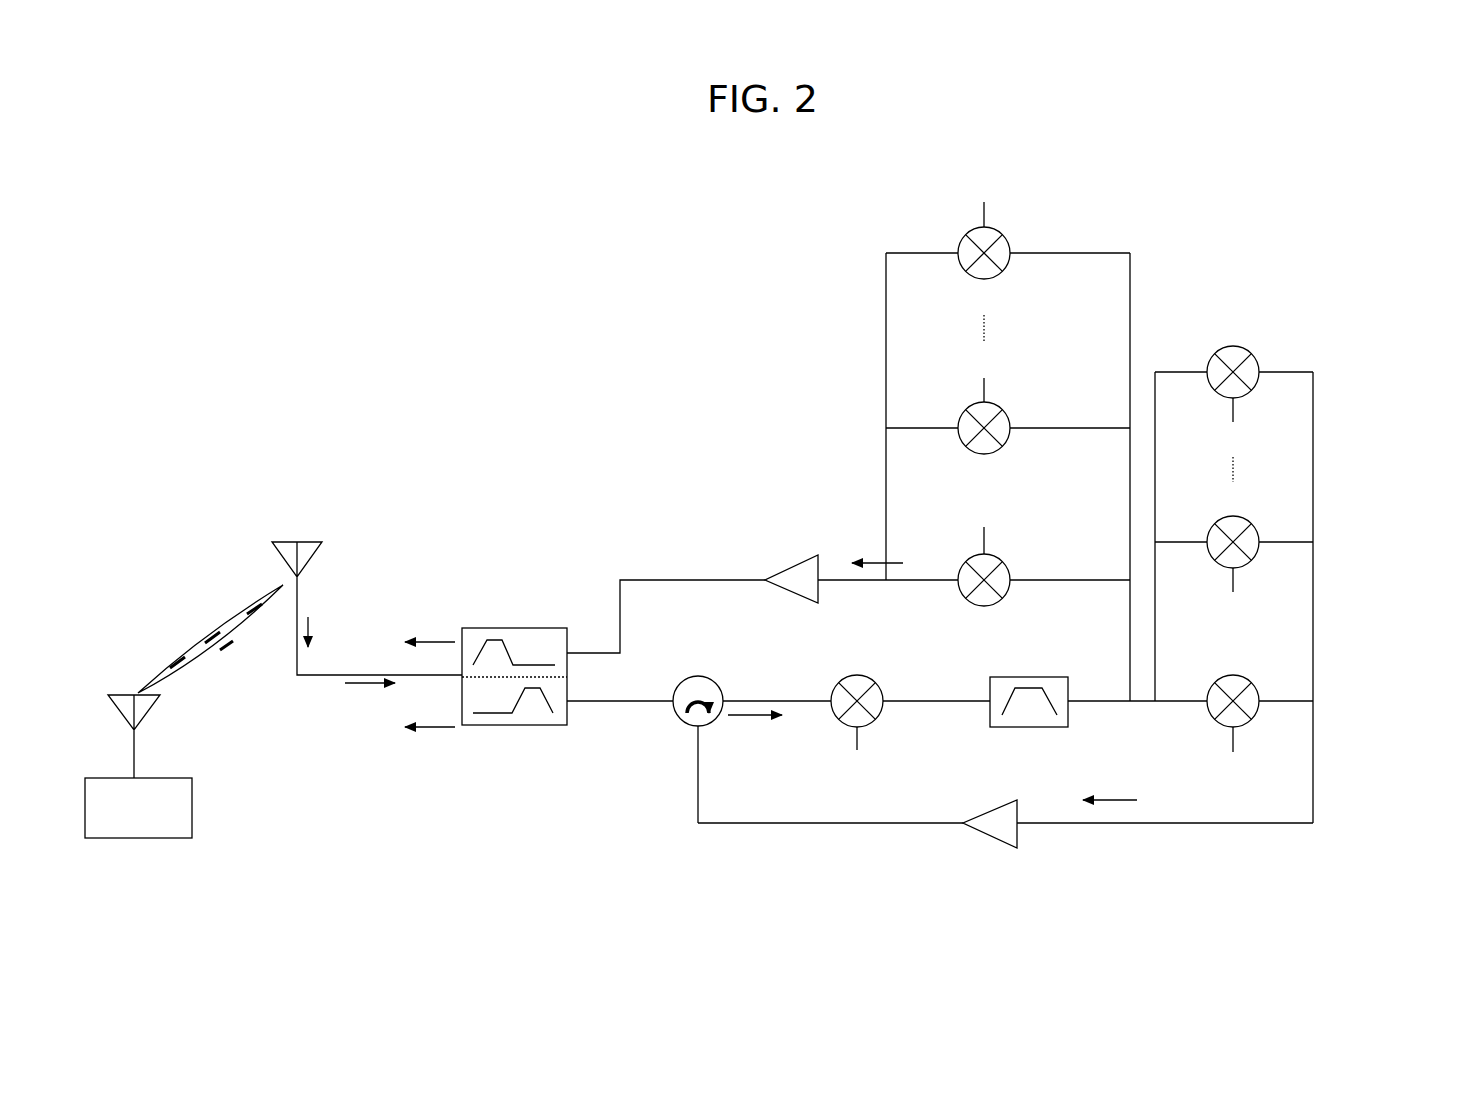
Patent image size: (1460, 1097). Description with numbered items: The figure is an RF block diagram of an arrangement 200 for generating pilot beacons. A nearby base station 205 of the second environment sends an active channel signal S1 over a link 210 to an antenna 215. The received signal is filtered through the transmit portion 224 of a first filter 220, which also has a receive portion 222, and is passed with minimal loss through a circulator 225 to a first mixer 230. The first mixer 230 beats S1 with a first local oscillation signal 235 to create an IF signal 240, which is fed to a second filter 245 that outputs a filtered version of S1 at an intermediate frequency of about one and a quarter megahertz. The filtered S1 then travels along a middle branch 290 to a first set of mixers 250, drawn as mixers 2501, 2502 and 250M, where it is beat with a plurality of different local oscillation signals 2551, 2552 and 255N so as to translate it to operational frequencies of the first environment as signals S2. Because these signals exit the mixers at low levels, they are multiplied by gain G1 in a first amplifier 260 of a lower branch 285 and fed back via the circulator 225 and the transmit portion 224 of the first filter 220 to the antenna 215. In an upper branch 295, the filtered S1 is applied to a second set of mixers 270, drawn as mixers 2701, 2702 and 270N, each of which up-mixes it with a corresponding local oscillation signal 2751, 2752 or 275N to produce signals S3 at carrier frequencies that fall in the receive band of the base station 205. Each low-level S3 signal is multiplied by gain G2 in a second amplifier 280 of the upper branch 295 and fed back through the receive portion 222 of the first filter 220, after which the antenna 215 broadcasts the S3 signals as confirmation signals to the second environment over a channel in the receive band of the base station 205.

The arrangement 200 is at (471, 303).
The base station 205 is at (162, 840).
The link 210 is at (198, 645).
The antenna 215 is at (286, 540).
The first filter 220 is at (509, 673).
The receive portion 222 is at (492, 628).
The transmit portion 224 is at (535, 727).
The circulator 225 is at (690, 678).
The first mixer 230 is at (840, 680).
The first local oscillation signal 235 is at (858, 737).
The IF signal 240 is at (928, 701).
The second filter 245 is at (1020, 677).
The first set of mixers 250 is at (1365, 467).
The mixer 250M is at (1230, 345).
The mixer 2502 is at (1230, 517).
The mixer 2501 is at (1232, 677).
The local oscillation signal 255N is at (1233, 408).
The local oscillation signal 2552 is at (1233, 578).
The local oscillation signal 2551 is at (1232, 742).
The first amplifier 260 is at (1000, 845).
The second set of mixers 270 is at (858, 335).
The mixer 270N is at (978, 278).
The mixer 2702 is at (1003, 447).
The mixer 2701 is at (983, 598).
The local oscillation signal 275N is at (984, 213).
The local oscillation signal 2752 is at (984, 393).
The local oscillation signal 2751 is at (984, 538).
The second amplifier 280 is at (803, 557).
The lower branch 285 is at (770, 823).
The middle branch 290 is at (755, 700).
The upper branch 295 is at (630, 580).